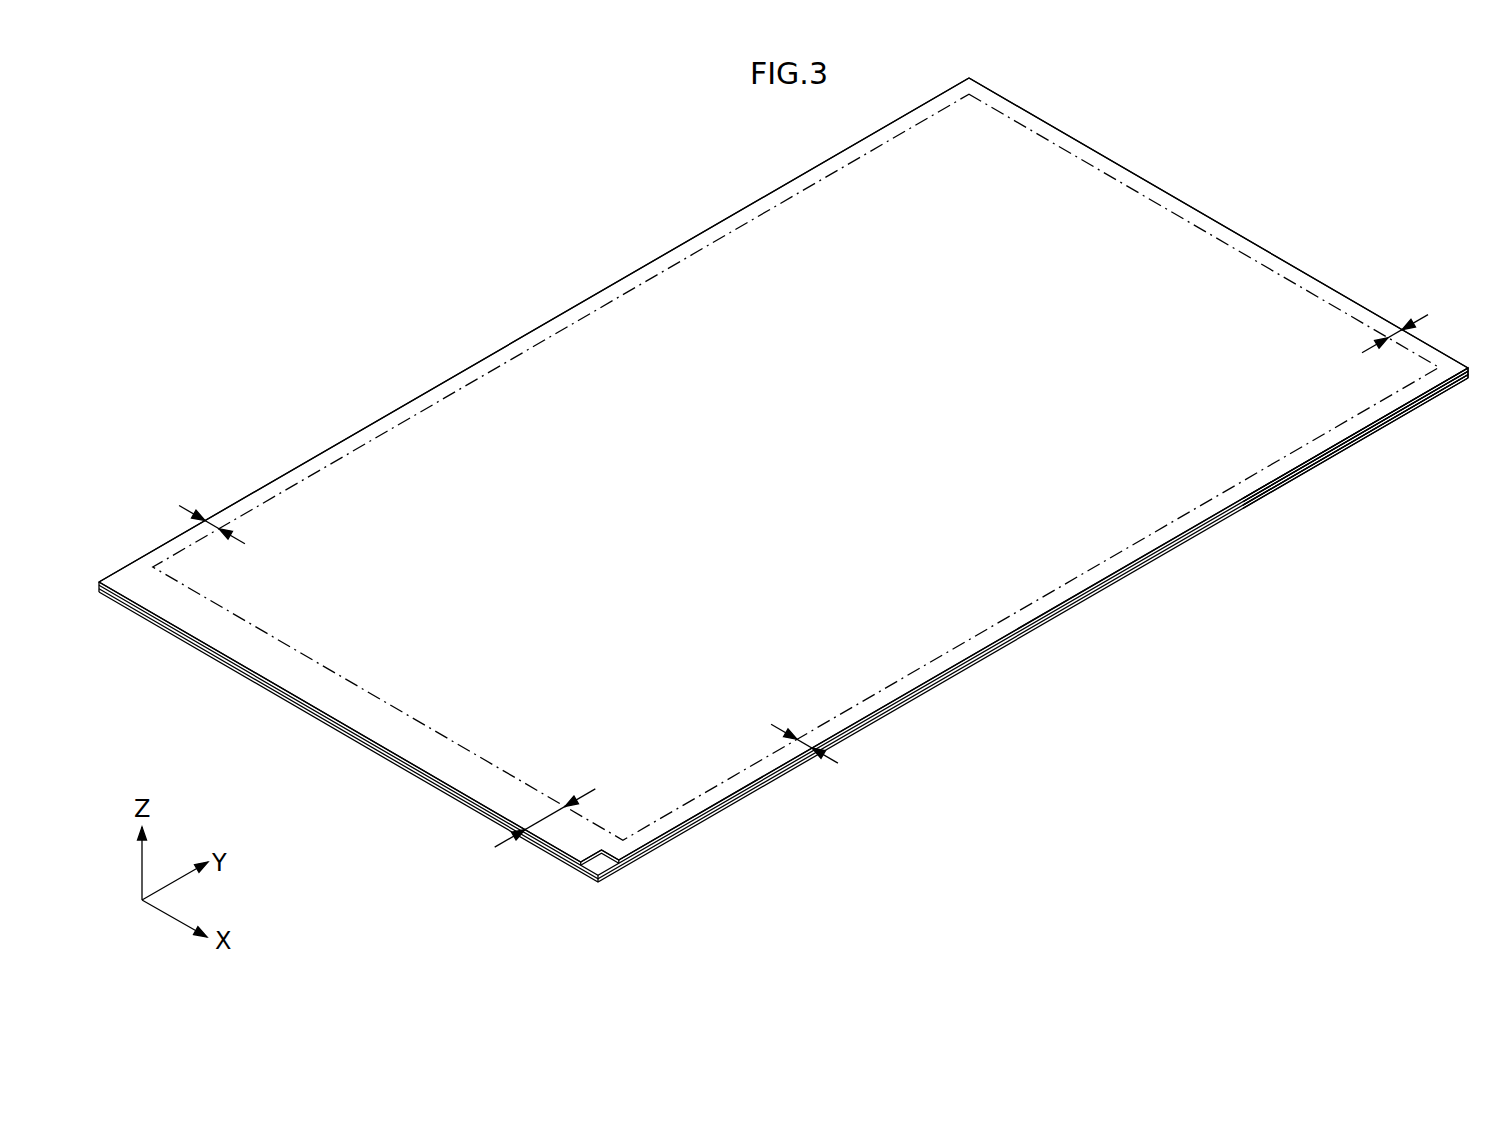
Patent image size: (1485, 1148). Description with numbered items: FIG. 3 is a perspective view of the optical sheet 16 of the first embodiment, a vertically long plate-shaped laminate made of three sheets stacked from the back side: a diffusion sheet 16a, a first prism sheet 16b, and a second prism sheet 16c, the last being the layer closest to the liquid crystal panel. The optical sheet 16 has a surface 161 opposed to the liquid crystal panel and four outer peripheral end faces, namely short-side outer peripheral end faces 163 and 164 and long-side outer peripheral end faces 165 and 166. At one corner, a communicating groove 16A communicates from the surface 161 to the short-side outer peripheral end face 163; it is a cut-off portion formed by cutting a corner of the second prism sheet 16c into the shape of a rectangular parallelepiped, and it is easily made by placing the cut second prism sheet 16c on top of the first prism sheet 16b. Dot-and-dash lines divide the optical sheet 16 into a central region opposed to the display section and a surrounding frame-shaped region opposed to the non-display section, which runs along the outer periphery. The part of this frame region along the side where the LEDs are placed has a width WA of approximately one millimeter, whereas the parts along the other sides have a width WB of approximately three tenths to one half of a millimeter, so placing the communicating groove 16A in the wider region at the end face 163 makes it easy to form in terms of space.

The optical sheet 16 is at (1050, 90).
The surface opposed to the liquid crystal panel 161 is at (592, 367).
The short-side outer peripheral end face 163 is at (362, 740).
The short-side outer peripheral end face 164 is at (1197, 207).
The long-side outer peripheral end face 165 is at (463, 372).
The long-side outer peripheral end face 166 is at (942, 683).
The communicating groove 16A is at (603, 860).
The diffusion sheet 16a is at (1243, 502).
The first prism sheet 16b is at (1280, 482).
The second prism sheet 16c is at (1315, 468).
The width of region opposed to other side parts WB is at (205, 522).
The width of region opposed to the side part at which LEDs are placed WA is at (545, 818).